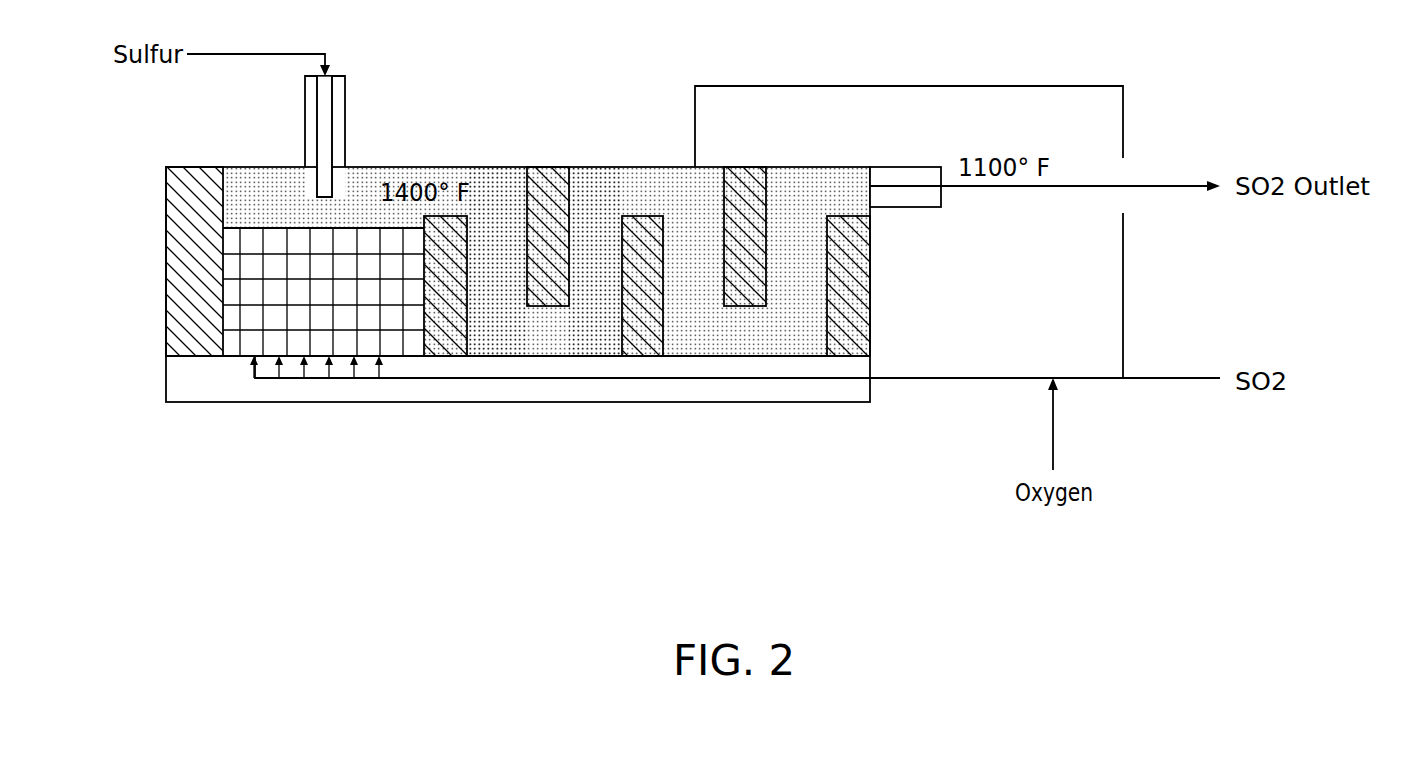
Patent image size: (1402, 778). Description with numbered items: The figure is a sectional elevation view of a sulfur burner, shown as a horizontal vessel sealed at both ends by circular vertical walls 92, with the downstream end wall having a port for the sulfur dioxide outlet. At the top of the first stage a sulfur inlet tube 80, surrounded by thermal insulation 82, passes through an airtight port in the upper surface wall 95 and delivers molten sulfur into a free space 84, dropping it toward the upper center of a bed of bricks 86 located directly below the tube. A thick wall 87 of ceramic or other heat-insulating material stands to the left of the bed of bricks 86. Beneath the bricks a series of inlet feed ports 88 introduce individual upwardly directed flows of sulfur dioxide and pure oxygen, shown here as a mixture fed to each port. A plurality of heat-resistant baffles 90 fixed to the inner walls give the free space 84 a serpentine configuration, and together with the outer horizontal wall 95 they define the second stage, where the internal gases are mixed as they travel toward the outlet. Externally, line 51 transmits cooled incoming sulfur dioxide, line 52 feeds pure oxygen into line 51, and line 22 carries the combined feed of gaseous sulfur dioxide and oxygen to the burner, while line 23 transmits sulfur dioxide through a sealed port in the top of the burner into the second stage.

The line 22 is at (940, 380).
The line 23 is at (905, 175).
The line 51 is at (1170, 380).
The feed line 52 is at (1055, 430).
The sulfur inlet tube 80 is at (327, 92).
The thermal insulation 82 is at (305, 114).
The free space 84 is at (348, 195).
The bed of bricks 86 is at (275, 295).
The thick wall 87 is at (173, 222).
The inlet feed ports 88 is at (315, 380).
The heat-resistant baffles 90 is at (546, 183).
The circular vertical walls 92 is at (173, 316).
The upper surface wall 95 is at (481, 167).